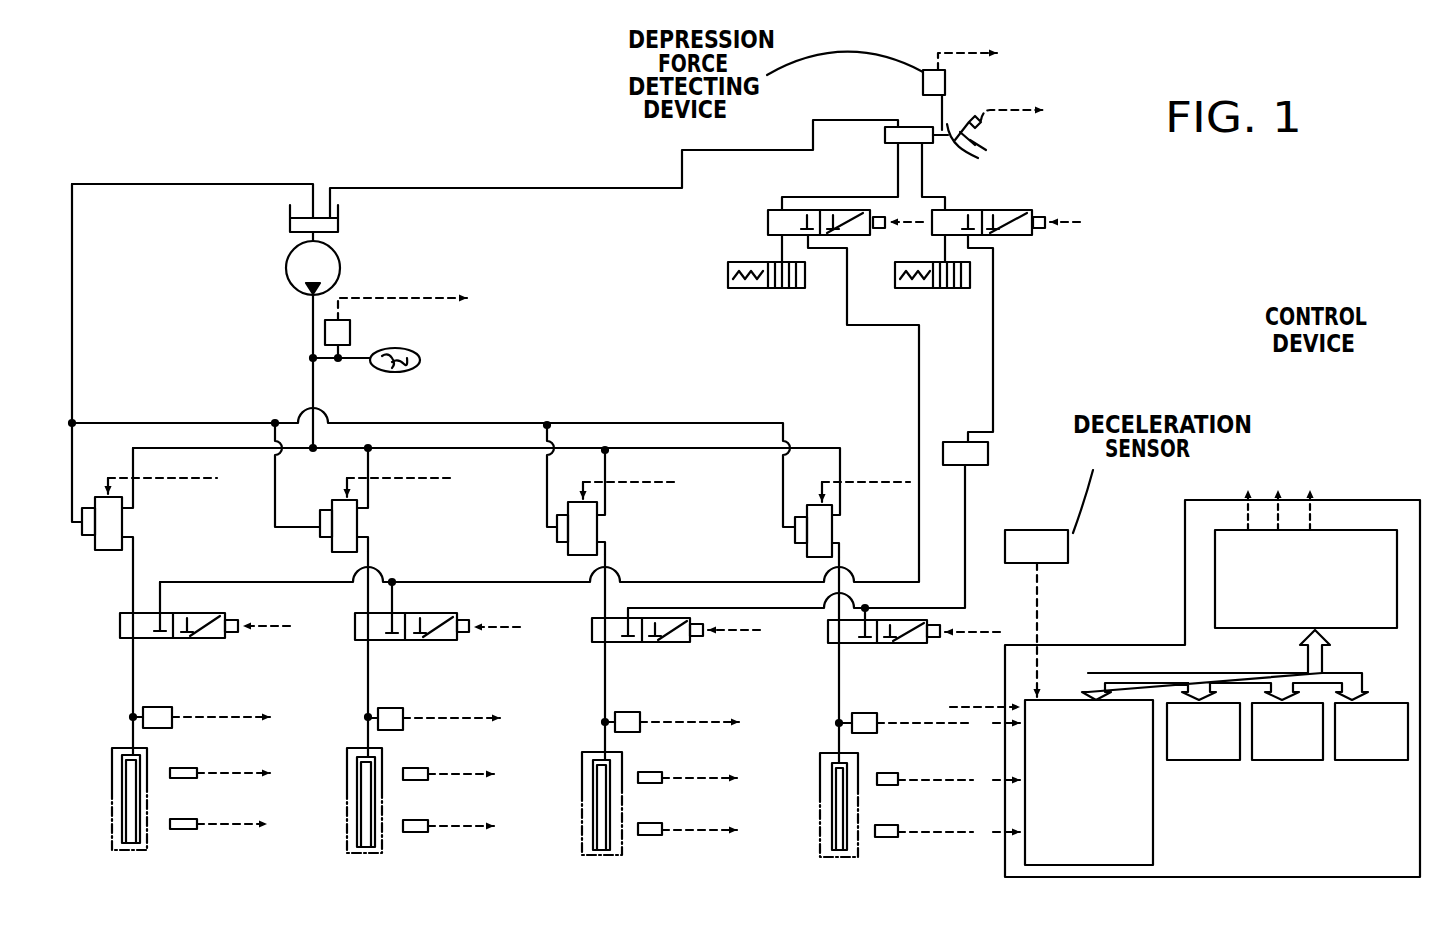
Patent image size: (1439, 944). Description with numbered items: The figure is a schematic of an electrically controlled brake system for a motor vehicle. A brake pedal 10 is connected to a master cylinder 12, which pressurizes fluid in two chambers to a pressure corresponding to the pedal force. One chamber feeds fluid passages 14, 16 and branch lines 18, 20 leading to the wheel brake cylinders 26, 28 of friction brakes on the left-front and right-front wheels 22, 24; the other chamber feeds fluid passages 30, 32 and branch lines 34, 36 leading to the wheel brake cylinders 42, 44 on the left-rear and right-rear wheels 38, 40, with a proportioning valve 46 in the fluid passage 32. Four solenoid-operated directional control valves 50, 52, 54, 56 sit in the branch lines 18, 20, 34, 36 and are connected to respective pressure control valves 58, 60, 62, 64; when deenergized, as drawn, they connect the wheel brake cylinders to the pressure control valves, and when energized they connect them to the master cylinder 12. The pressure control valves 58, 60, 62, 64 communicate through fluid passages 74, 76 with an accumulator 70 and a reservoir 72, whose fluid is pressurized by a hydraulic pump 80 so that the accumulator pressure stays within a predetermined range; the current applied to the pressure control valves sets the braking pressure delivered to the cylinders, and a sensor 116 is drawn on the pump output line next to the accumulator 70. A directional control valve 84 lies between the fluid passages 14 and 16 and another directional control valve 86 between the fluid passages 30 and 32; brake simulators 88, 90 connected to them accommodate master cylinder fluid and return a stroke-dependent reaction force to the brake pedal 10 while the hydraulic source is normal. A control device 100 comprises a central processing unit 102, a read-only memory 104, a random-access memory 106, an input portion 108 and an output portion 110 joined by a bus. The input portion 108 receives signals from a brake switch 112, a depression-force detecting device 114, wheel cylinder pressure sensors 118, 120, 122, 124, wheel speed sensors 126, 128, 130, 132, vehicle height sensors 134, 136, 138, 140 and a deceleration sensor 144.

The brake pedal 10 is at (987, 158).
The master cylinder 12 is at (893, 135).
The fluid passage 14 is at (898, 175).
The fluid passage 16 is at (847, 325).
The branch line 18 is at (128, 663).
The branch line 20 is at (365, 665).
The left-front wheel 22 is at (172, 796).
The right-front wheel 24 is at (408, 796).
The wheel brake cylinder 26 is at (148, 755).
The wheel brake cylinder 28 is at (383, 757).
The fluid passage 30 is at (922, 170).
The fluid passage 32 is at (992, 317).
The branch line 34 is at (603, 665).
The branch line 36 is at (836, 672).
The left-rear wheel 38 is at (646, 796).
The right-rear wheel 40 is at (876, 798).
The wheel brake cylinder 42 is at (622, 758).
The wheel brake cylinder 44 is at (852, 765).
The proportioning valve 46 is at (988, 457).
The solenoid-operated directional control valve 50 is at (183, 640).
The solenoid-operated directional control valve 52 is at (415, 640).
The solenoid-operated directional control valve 54 is at (655, 643).
The solenoid-operated directional control valve 56 is at (890, 645).
The pressure control valve 58 is at (122, 520).
The pressure control valve 60 is at (357, 520).
The pressure control valve 62 is at (597, 527).
The pressure control valve 64 is at (832, 530).
The accumulator 70 is at (410, 358).
The reservoir 72 is at (338, 224).
The fluid passage 74 is at (313, 397).
The fluid passage 76 is at (72, 360).
The hydraulic pump 80 is at (328, 262).
The solenoid-operated directional control valve 84 is at (775, 210).
The solenoid-operated directional control valve 86 is at (1002, 210).
The brake simulator 88 is at (738, 288).
The brake simulator 90 is at (952, 288).
The control device 100 is at (1213, 620).
The central processing unit 102 is at (1210, 760).
The read-only memory 104 is at (1292, 760).
The random-access memory 106 is at (1372, 760).
The input portion 108 is at (1153, 848).
The output portion 110 is at (1367, 622).
The brake switch 112 is at (977, 116).
The depression-force detecting device 114 is at (923, 83).
The pressure sensor 116 is at (350, 335).
The wheel cylinder pressure sensor 118 is at (162, 707).
The wheel cylinder pressure sensor 120 is at (395, 708).
The wheel cylinder pressure sensor 122 is at (630, 712).
The wheel cylinder pressure sensor 124 is at (865, 713).
The wheel speed sensor 126 is at (188, 768).
The wheel speed sensor 128 is at (420, 768).
The wheel speed sensor 130 is at (655, 772).
The wheel speed sensor 132 is at (892, 773).
The vehicle height sensor 134 is at (183, 819).
The vehicle height sensor 136 is at (415, 820).
The vehicle height sensor 138 is at (652, 823).
The vehicle height sensor 140 is at (888, 825).
The deceleration sensor 144 is at (1033, 530).